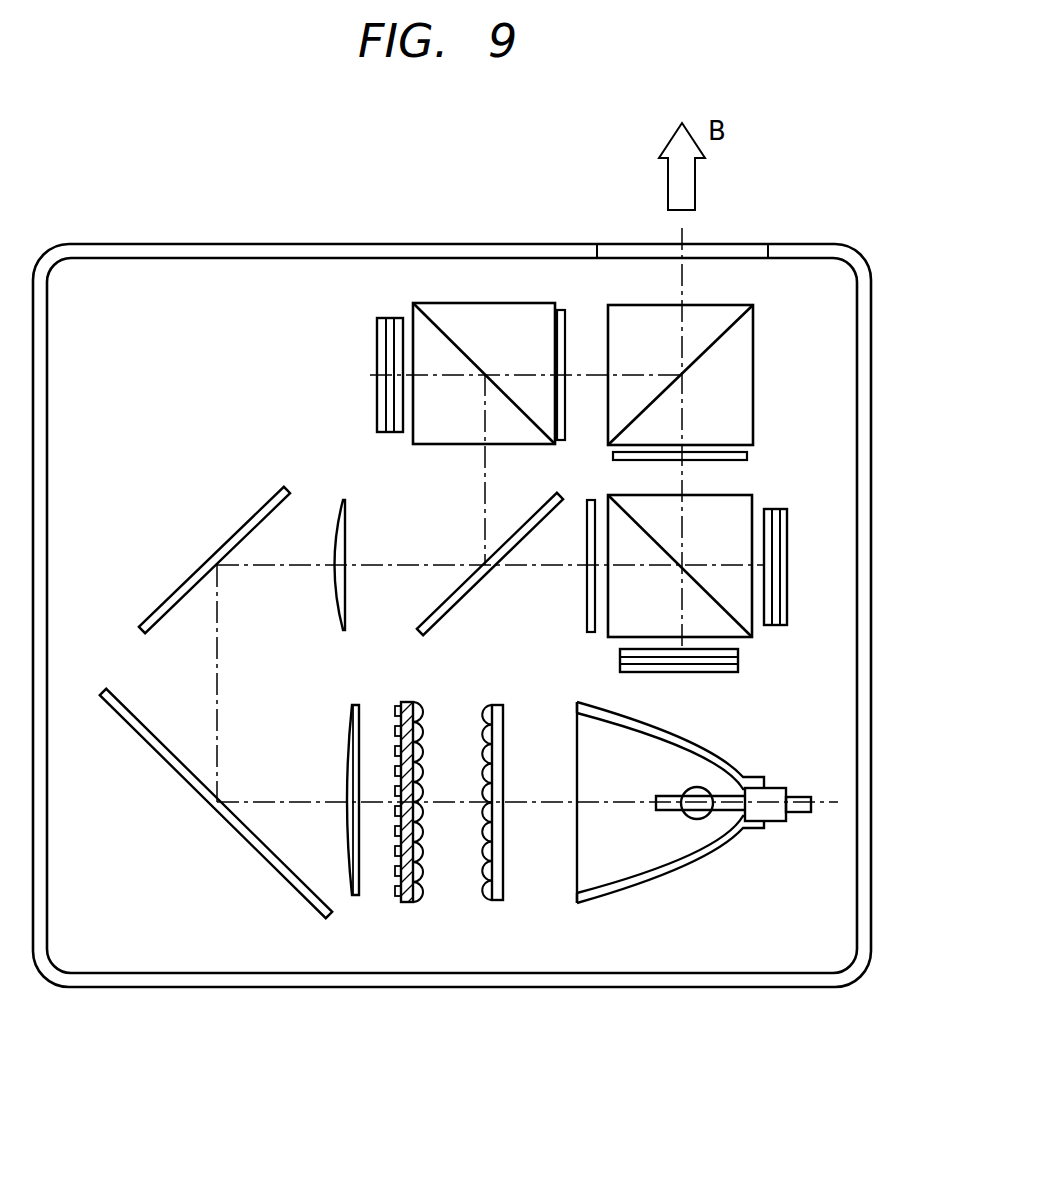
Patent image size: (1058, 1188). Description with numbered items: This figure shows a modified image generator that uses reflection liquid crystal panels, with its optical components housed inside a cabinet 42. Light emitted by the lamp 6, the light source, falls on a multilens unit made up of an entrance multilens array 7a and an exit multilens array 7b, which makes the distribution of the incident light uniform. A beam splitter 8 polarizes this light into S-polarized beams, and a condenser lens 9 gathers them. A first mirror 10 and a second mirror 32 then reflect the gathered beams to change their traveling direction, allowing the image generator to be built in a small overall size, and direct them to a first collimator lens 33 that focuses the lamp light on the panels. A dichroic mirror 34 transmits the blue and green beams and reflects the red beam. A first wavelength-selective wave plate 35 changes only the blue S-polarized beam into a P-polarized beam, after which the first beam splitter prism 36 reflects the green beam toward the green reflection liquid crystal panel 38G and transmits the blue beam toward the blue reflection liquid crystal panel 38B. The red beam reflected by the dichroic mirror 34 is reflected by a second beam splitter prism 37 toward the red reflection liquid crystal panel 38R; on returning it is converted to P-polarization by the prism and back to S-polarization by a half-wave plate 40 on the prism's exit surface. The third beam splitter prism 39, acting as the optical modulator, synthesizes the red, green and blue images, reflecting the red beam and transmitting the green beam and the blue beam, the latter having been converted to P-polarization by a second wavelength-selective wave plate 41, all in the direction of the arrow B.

The housing 42 is at (195, 243).
The half-wave plate 40 is at (560, 308).
The red reflection liquid crystal panel 38R is at (378, 348).
The second beam splitter prism 37 is at (437, 445).
The third beam splitter prism 39 is at (747, 340).
The second wavelength-selective wave plate 41 is at (747, 455).
The first beam splitter prism 36 is at (752, 628).
The first wavelength-selective wave plate 35 is at (587, 623).
The blue reflection liquid crystal panel 38B is at (787, 555).
The green reflection liquid crystal panel 38G is at (725, 672).
The second mirror 32 is at (198, 568).
The first collimator lens 33 is at (336, 505).
The dichroic mirror 34 is at (418, 631).
The first mirror 10 is at (228, 827).
The condenser lens 9 is at (353, 896).
The beam splitter 8 is at (405, 902).
The exit multilens array 7b is at (415, 902).
The entrance multilens array 7a is at (495, 900).
The lamp 6 is at (735, 840).